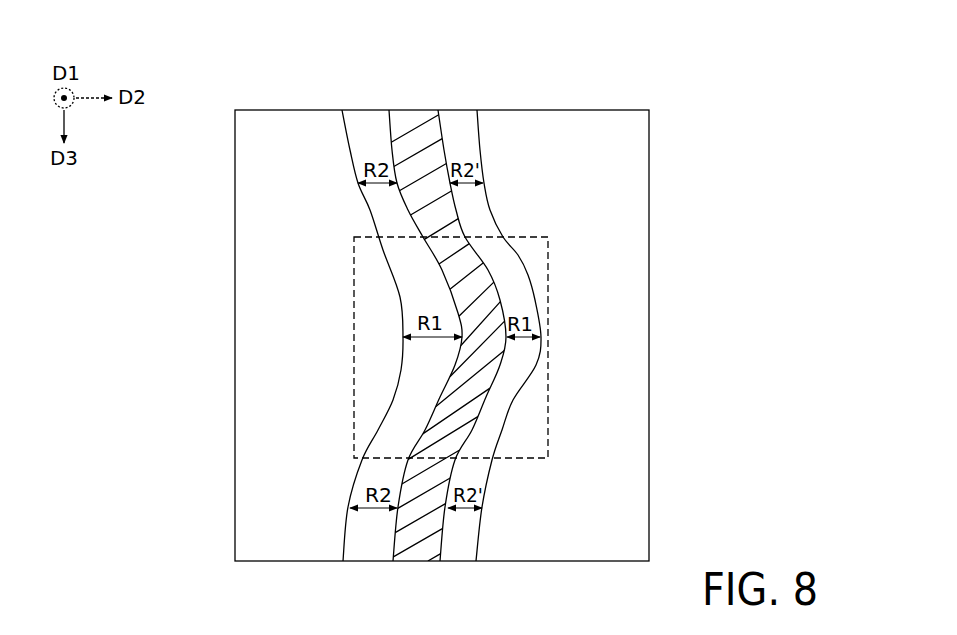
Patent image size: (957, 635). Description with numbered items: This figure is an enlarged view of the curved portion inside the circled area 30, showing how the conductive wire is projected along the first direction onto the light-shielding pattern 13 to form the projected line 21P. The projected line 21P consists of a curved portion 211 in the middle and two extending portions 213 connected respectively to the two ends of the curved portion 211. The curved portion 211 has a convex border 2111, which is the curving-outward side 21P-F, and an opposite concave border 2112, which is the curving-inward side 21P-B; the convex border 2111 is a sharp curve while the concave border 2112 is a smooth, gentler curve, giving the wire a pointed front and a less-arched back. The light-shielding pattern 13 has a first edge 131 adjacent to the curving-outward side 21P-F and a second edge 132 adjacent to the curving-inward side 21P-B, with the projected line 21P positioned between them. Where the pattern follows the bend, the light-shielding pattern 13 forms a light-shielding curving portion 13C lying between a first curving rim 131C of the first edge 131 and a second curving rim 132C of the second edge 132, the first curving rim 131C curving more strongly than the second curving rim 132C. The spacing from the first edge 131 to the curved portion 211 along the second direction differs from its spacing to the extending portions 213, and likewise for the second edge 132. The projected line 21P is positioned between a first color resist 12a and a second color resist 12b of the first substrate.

The circled area 30 is at (832, 84).
The light-shielding pattern 13 is at (439, 312).
The first edge 131 is at (489, 197).
The second edge 132 is at (355, 170).
The first curving rim 131C is at (528, 272).
The light-shielding curving portion 13C is at (355, 252).
The second curving rim 132C is at (402, 295).
The projected line 21P is at (413, 108).
The curving-outward side 21P-F is at (506, 348).
The curving-inward side 21P-B is at (400, 355).
The curved portion 211 is at (486, 325).
The convex border 2111 is at (479, 405).
The concave border 2112 is at (395, 400).
The extending portions 213 is at (426, 158).
The first color resist 12a is at (260, 426).
The second color resist 12b is at (622, 472).